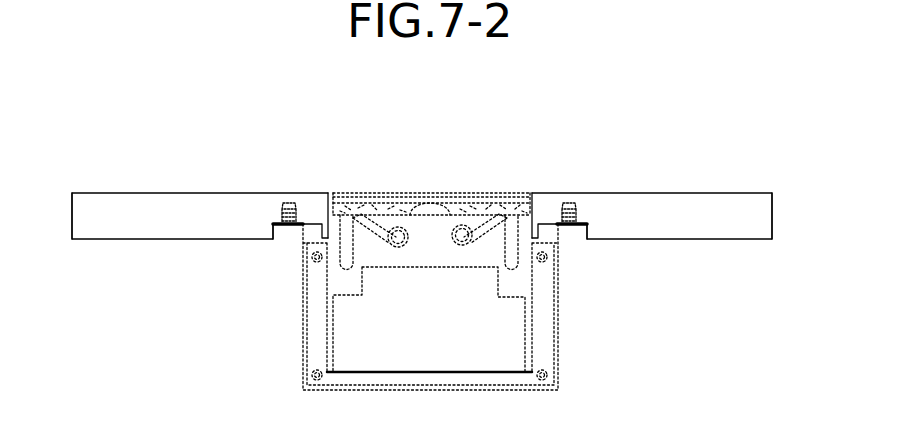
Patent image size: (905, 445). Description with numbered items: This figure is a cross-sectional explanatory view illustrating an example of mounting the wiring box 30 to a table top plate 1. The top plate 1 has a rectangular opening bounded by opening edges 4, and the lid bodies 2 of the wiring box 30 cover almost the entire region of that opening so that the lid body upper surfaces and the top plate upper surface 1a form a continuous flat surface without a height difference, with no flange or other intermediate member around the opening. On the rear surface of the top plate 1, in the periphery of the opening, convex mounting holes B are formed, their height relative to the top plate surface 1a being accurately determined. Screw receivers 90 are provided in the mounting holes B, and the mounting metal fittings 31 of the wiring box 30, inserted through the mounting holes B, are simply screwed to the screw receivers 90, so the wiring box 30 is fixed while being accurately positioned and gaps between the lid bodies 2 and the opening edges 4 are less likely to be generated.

The top plate 1 is at (193, 193).
The top plate upper surface 1a is at (97, 193).
The lid body 2 is at (381, 193).
The opening edge 4 is at (327, 193).
The wiring box 30 is at (560, 348).
The mounting metal fitting 31 is at (270, 239).
The screw receiver 90 is at (279, 211).
The mounting hole B is at (287, 232).